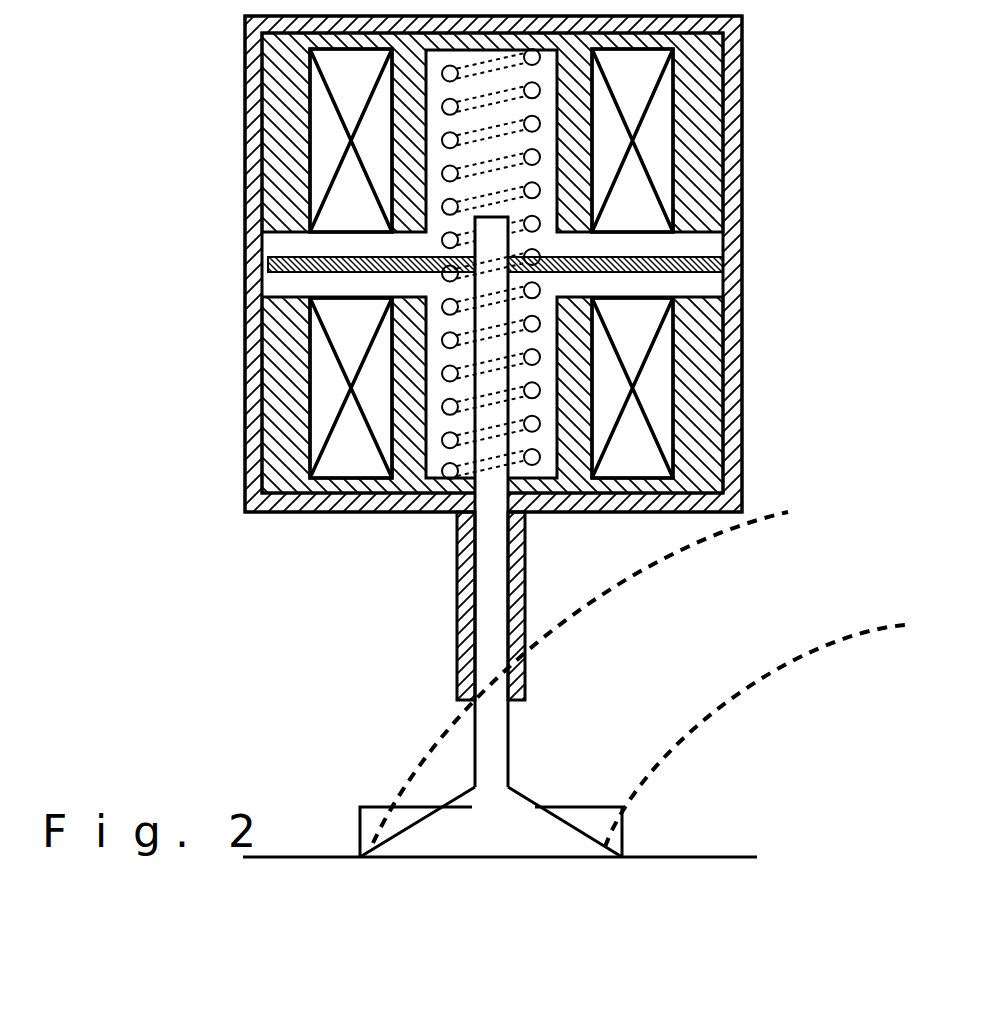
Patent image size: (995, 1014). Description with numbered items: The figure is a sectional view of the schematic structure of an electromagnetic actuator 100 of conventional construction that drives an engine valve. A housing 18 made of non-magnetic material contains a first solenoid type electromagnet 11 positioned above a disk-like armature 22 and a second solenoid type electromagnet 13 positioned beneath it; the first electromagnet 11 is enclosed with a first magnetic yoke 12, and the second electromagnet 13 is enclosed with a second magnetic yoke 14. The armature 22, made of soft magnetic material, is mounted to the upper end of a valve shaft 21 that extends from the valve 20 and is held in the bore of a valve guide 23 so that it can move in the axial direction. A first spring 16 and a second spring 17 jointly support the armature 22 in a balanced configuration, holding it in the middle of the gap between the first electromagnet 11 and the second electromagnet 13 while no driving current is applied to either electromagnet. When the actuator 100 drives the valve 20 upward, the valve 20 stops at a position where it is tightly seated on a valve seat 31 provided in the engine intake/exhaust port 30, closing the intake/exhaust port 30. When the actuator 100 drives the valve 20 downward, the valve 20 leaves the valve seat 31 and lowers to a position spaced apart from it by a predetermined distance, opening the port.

The electromagnetic actuator 100 is at (243, 178).
The first electromagnet 11 is at (657, 148).
The first magnetic yoke 12 is at (715, 203).
The second electromagnet 13 is at (660, 375).
The second magnetic yoke 14 is at (740, 436).
The first spring 16 is at (538, 57).
The second spring 17 is at (443, 445).
The housing 18 is at (243, 443).
The valve 20 is at (513, 830).
The valve shaft 21 is at (495, 627).
The armature 22 is at (294, 273).
The valve guide 23 is at (518, 563).
The intake/exhaust port 30 is at (660, 692).
The valve seat 31 is at (360, 808).